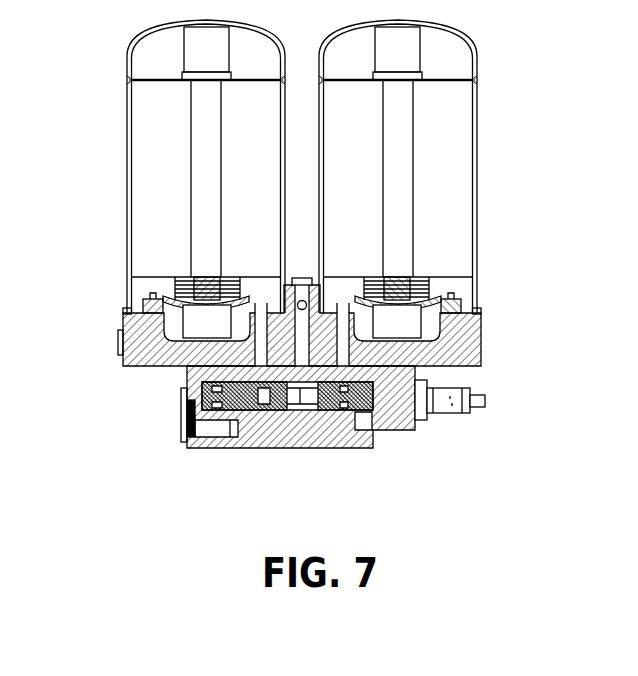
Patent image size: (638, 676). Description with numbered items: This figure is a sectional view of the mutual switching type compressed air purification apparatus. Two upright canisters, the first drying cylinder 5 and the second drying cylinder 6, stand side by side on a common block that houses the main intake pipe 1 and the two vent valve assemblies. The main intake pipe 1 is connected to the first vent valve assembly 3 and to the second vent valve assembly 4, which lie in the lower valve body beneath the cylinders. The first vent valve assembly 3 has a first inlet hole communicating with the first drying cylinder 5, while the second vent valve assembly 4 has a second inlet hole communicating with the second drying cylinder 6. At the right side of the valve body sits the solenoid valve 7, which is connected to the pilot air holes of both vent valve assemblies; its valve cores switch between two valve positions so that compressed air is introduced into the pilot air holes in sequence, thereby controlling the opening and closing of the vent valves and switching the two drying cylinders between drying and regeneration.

The main intake pipe 1 is at (303, 398).
The first vent valve assembly 3 is at (228, 422).
The second vent valve assembly 4 is at (377, 427).
The first drying cylinder 5 is at (175, 253).
The second drying cylinder 6 is at (425, 255).
The solenoid valve 7 is at (450, 410).